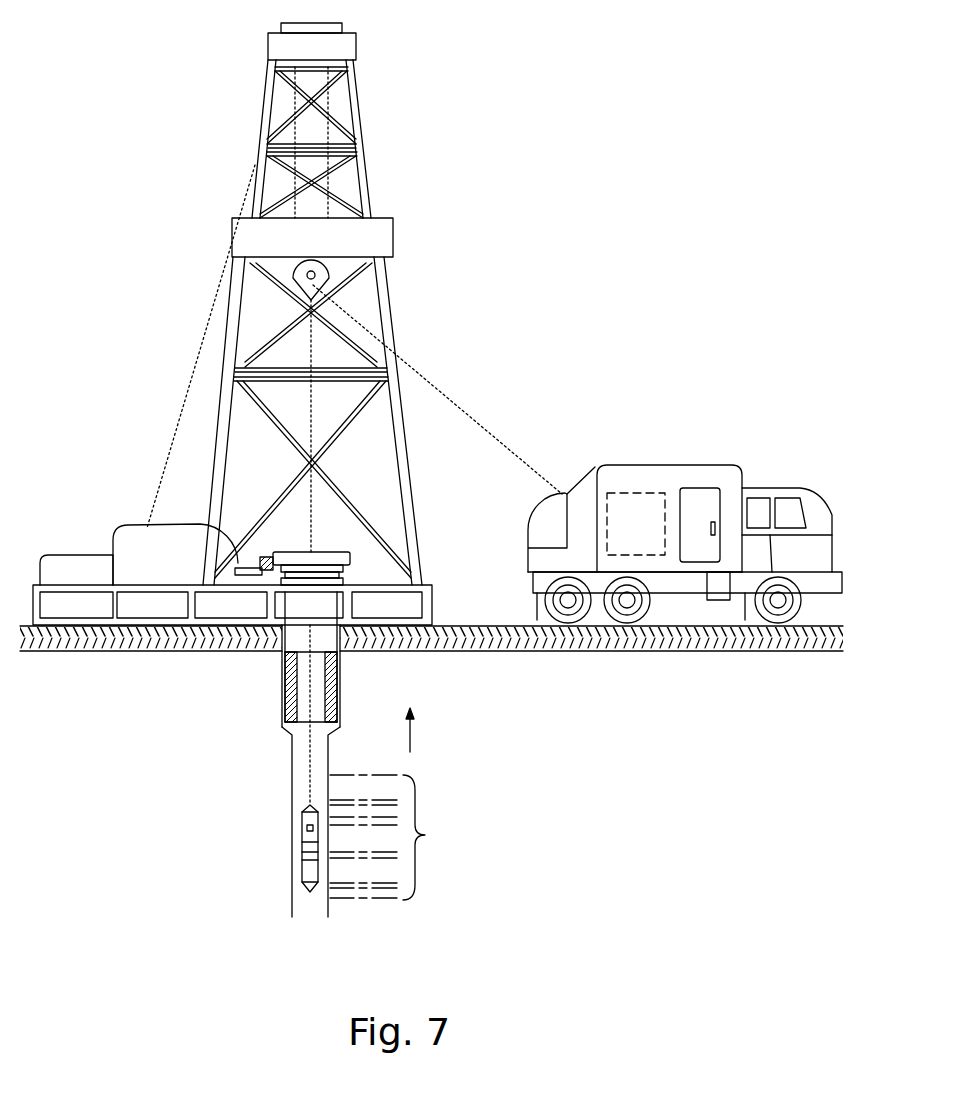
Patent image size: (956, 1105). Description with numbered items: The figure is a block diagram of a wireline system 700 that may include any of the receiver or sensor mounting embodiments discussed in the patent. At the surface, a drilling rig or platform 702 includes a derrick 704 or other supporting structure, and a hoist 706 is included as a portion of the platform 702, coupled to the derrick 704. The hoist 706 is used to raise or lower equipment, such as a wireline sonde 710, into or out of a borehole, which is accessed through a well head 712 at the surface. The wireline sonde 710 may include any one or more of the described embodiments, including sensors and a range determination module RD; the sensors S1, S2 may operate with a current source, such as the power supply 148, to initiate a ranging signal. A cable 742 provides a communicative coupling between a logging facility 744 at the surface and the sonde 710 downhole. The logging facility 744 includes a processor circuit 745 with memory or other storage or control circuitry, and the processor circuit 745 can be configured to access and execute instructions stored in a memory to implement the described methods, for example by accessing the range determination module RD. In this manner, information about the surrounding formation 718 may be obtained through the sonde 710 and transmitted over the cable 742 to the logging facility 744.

The wireline system 700 is at (135, 125).
The platform 702 is at (433, 605).
The derrick 704 is at (420, 553).
The hoist 706 is at (332, 268).
The wireline sonde 710 is at (303, 840).
The well head 712 is at (335, 550).
The formation 718 is at (404, 837).
The cable 742 is at (450, 402).
The logging facility 744 is at (694, 488).
The processor circuit 745 is at (620, 492).
The power supply 148 is at (303, 828).